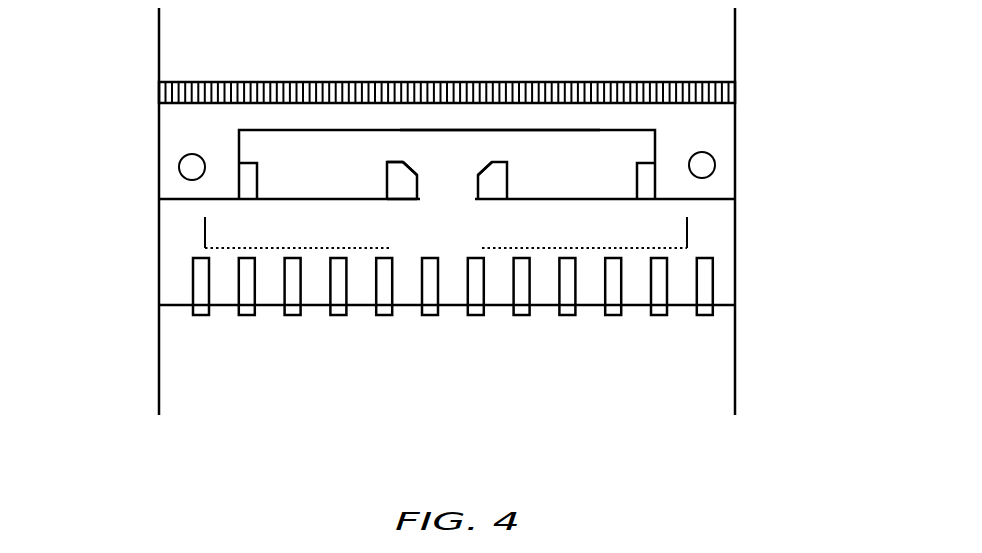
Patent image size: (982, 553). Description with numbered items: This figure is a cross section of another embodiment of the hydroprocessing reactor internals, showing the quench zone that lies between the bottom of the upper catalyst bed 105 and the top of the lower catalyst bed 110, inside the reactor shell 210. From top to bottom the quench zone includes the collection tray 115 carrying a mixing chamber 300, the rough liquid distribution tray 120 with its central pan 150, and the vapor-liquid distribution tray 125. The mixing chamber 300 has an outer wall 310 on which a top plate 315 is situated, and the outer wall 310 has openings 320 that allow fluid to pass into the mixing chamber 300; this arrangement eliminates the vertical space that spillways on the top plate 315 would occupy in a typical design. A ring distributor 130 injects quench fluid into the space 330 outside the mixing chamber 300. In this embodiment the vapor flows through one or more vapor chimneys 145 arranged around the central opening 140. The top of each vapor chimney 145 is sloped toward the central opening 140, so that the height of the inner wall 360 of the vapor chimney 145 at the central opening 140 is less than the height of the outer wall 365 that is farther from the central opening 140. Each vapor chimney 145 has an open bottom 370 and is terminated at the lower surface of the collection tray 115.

The upper catalyst bed 105 is at (725, 43).
The lower catalyst bed 110 is at (725, 361).
The collection tray 115 is at (710, 199).
The rough liquid distribution tray 120 is at (725, 214).
The vapor-liquid distribution tray 125 is at (725, 280).
The ring distributor 130 is at (181, 164).
The central opening 140 is at (450, 190).
The vapor chimney 145 is at (405, 163).
The central pan 150 is at (392, 248).
The reactor shell 210 is at (159, 372).
The mixing chamber 300 is at (645, 159).
The outer wall 310 is at (657, 148).
The top plate 315 is at (587, 130).
The openings 320 is at (648, 183).
The space 330 is at (668, 157).
The inner wall 360 is at (478, 182).
The outer wall 365 is at (386, 184).
The open bottom 370 is at (400, 199).